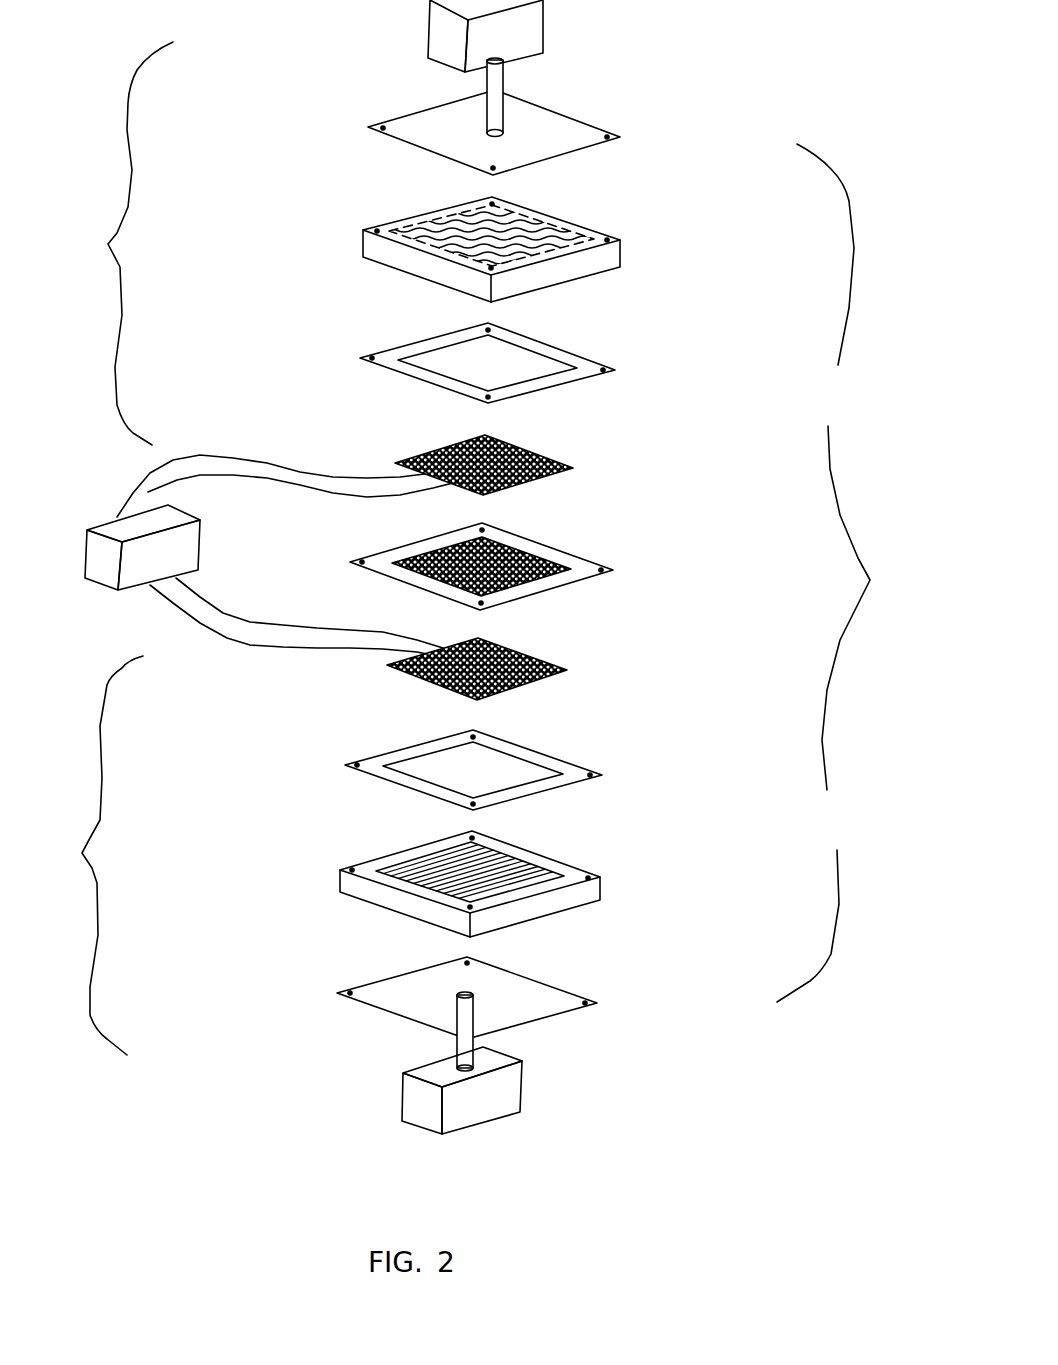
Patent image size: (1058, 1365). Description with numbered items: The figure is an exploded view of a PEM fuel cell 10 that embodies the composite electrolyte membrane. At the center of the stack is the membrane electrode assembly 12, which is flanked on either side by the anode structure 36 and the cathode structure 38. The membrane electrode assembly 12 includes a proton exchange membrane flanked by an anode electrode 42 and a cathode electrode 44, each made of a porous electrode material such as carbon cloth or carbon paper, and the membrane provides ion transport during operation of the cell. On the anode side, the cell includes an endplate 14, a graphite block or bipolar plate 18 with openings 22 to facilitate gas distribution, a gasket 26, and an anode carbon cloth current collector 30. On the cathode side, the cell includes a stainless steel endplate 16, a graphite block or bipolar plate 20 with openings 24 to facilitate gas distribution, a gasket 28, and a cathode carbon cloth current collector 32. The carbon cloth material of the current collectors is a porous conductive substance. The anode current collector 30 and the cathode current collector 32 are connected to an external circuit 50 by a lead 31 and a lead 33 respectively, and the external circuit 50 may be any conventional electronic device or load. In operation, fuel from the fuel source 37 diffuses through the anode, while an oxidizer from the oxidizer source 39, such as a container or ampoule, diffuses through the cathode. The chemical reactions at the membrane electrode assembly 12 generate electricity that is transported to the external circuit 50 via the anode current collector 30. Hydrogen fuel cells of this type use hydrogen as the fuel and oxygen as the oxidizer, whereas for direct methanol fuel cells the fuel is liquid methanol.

The fuel cell 10 is at (841, 573).
The membrane electrode assembly 12 is at (540, 561).
The endplate 14 is at (511, 1010).
The stainless steel endplate 16 is at (539, 124).
The graphite block or bipolar plate 18 is at (515, 890).
The graphite block or bipolar plate 20 is at (536, 236).
The openings 22 is at (533, 872).
The openings 24 is at (545, 218).
The gasket 26 is at (518, 781).
The gasket 28 is at (535, 348).
The anode carbon cloth current collector 30 is at (540, 681).
The lead 31 is at (300, 628).
The cathode carbon cloth current collector 32 is at (552, 444).
The lead 33 is at (310, 472).
The anode structure 36 is at (98, 855).
The fuel source 37 is at (541, 1115).
The cathode structure 38 is at (125, 243).
The oxidizer source 39 is at (562, 23).
The anode electrode 42 is at (629, 612).
The cathode electrode 44 is at (561, 538).
The external circuit 50 is at (100, 588).